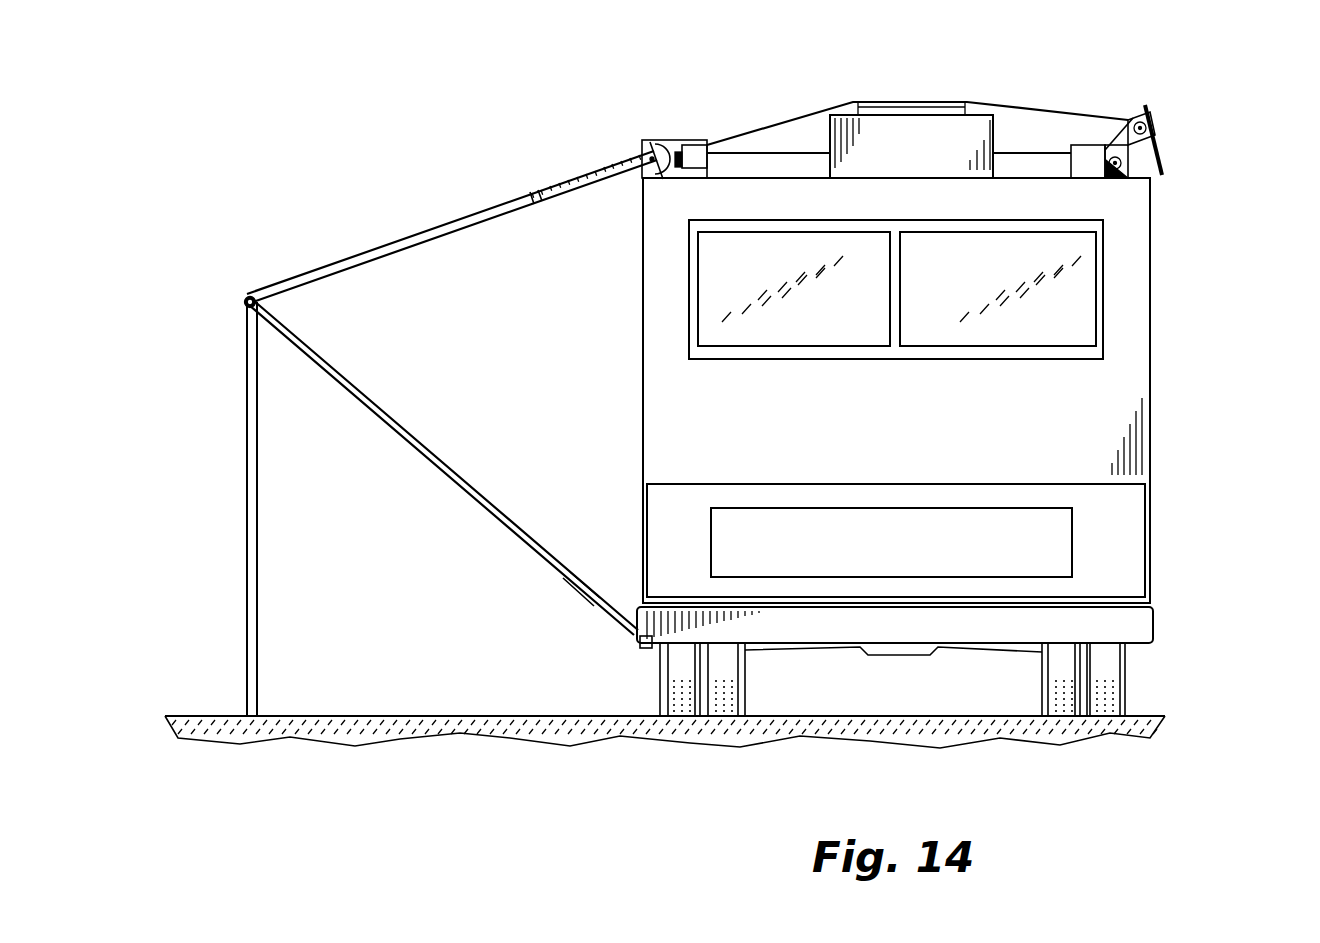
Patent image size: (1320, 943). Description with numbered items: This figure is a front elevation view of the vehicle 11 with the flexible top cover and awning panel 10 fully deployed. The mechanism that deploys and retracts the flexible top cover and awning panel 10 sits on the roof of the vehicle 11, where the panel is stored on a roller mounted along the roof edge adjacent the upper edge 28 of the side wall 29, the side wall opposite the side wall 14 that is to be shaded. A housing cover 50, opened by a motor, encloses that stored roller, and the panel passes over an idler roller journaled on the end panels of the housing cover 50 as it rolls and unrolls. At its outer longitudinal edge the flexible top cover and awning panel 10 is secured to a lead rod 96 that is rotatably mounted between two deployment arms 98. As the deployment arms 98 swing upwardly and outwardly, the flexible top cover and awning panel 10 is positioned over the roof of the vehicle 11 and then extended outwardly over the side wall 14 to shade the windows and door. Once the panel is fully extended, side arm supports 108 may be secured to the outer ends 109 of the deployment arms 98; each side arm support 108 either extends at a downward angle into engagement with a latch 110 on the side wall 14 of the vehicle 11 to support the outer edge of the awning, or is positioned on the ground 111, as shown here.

The flexible top cover and awning panel 10 is at (1037, 108).
The vehicle 11 is at (640, 287).
The side wall 14 is at (641, 482).
The upper edge 28 is at (1149, 181).
The side wall 29 is at (1147, 484).
The housing cover 50 is at (1162, 153).
The lead rod 96 is at (246, 299).
The deployment arm 98 is at (353, 264).
The side arm support 108 is at (360, 409).
The outer end 109 is at (247, 304).
The latch 110 is at (637, 641).
The ground 111 is at (227, 716).